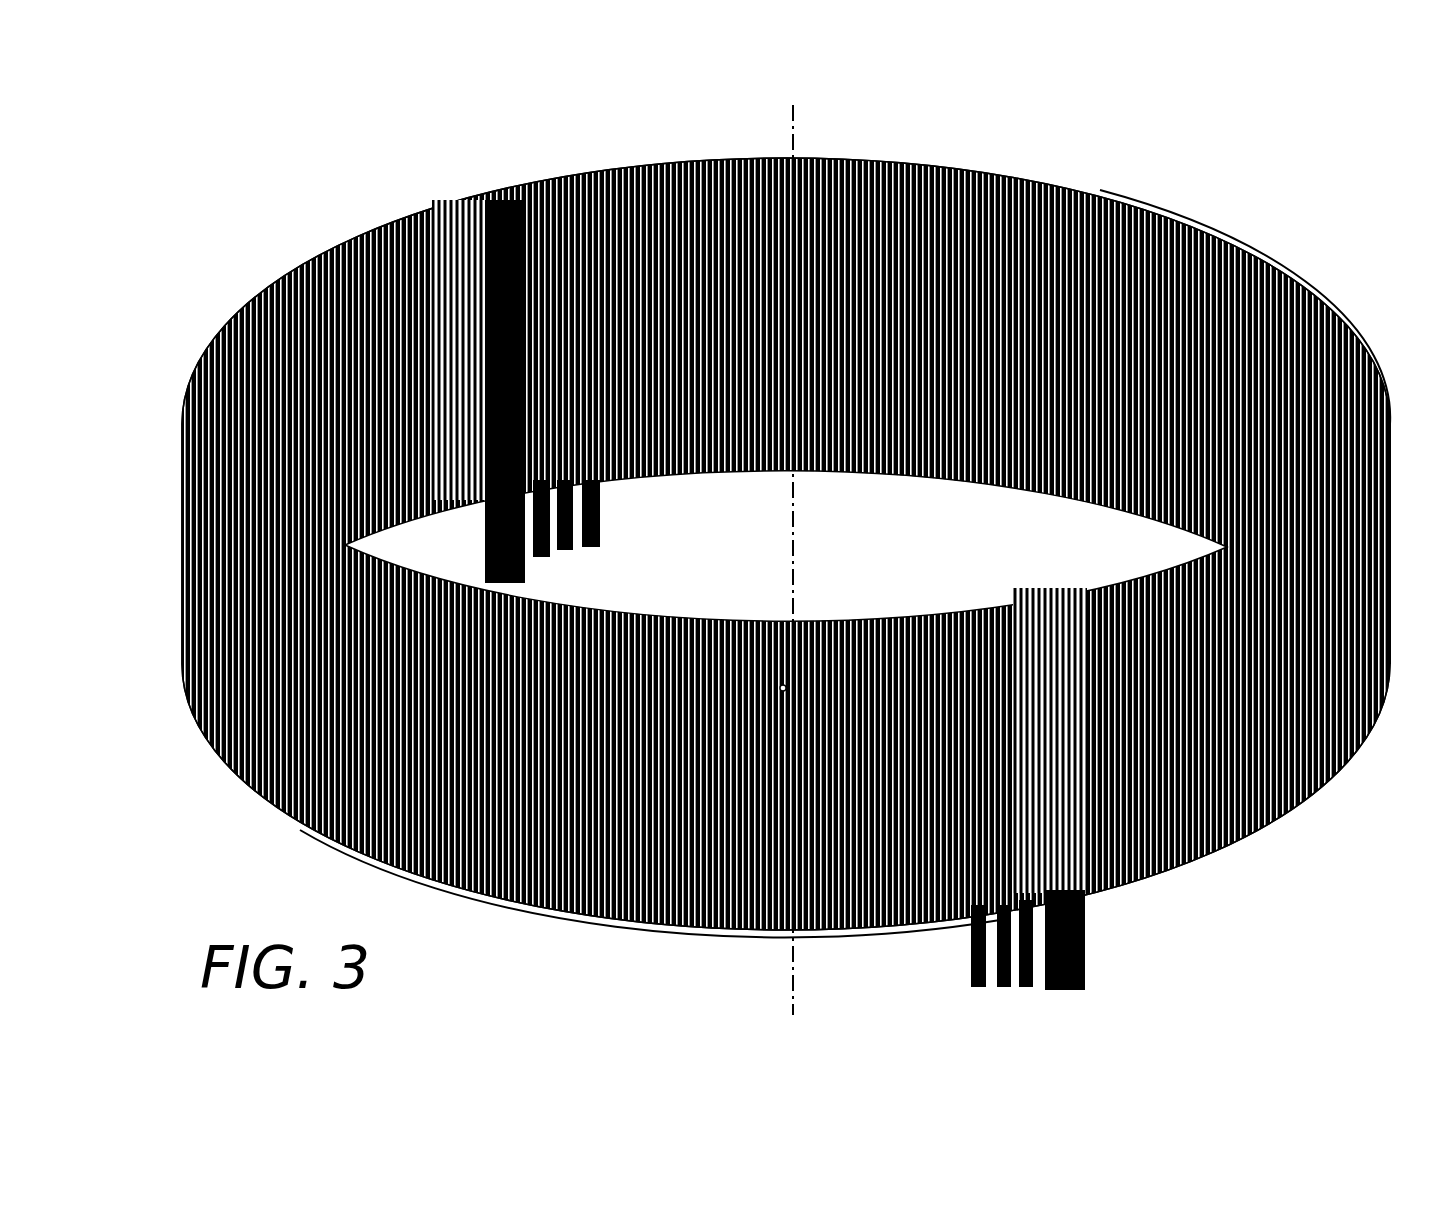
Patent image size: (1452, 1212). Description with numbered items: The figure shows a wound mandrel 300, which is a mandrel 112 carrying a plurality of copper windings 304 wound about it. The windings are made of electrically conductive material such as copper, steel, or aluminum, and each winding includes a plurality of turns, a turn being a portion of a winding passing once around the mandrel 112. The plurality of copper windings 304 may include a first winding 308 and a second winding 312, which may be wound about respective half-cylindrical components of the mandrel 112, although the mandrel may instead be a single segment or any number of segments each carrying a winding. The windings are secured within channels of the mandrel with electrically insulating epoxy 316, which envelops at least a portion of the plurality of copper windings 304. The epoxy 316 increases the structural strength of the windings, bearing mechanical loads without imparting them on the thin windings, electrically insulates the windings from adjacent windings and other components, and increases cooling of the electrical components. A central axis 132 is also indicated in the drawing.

The wound mandrel 300 is at (388, 182).
The mandrel 112 is at (503, 200).
The plurality of copper windings 304 is at (1183, 227).
The first winding 308 is at (577, 917).
The second winding 312 is at (1213, 833).
The electrically insulating epoxy 316 is at (1347, 300).
The central axis 132 is at (795, 547).